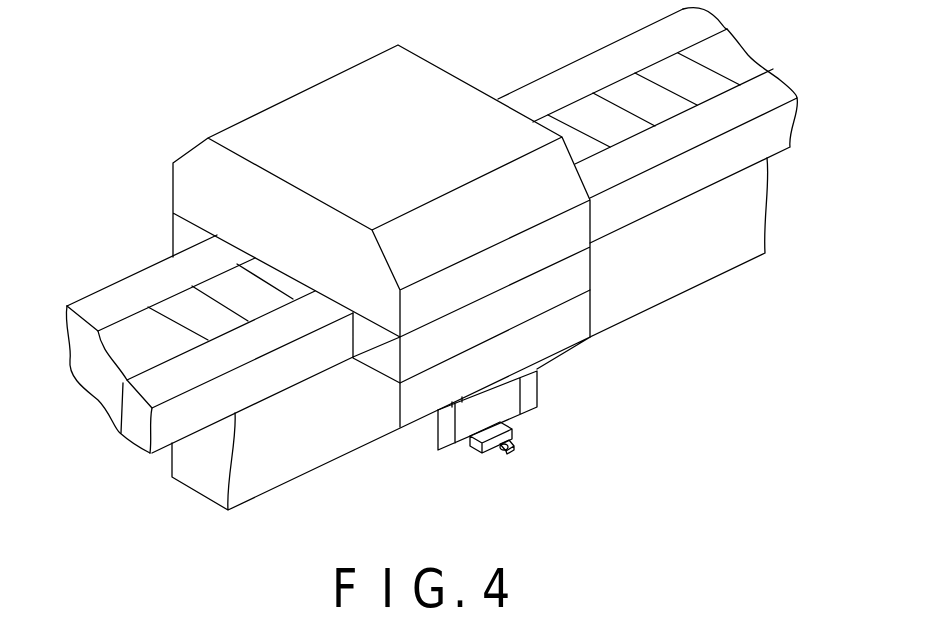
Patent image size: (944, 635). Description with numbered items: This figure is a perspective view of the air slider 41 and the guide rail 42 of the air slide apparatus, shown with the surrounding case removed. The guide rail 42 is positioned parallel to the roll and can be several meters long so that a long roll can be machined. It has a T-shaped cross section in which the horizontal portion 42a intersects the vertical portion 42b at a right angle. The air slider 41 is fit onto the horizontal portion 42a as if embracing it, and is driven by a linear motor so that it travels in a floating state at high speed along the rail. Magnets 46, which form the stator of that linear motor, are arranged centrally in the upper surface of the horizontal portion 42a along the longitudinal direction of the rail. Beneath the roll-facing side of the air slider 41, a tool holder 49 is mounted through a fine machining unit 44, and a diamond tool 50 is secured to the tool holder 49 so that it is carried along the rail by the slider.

The air slider 41 is at (310, 87).
The guide rail 42 is at (647, 209).
The horizontal portion 42a is at (778, 140).
The vertical portion 42b is at (667, 277).
The fine machining unit 44 is at (508, 412).
The magnets 46 is at (178, 305).
The tool holder 49 is at (480, 447).
The diamond tool 50 is at (513, 448).